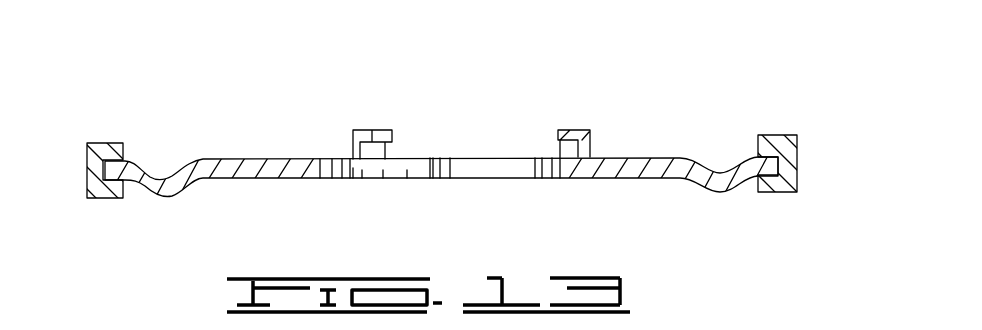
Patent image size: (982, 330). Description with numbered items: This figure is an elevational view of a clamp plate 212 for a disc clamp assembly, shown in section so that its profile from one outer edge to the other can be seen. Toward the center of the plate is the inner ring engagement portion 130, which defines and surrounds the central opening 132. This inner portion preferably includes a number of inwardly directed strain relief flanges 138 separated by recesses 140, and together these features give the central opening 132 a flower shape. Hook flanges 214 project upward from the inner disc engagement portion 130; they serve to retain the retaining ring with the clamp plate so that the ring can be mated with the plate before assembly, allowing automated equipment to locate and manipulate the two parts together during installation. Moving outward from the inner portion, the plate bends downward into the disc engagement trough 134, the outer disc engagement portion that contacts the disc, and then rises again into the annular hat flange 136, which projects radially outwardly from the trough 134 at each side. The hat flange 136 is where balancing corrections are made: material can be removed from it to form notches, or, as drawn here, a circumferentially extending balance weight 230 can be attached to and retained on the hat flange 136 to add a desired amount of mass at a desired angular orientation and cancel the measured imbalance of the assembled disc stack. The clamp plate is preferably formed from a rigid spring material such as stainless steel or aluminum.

The clamp plate 212 is at (263, 67).
The inner ring engagement portion 130 is at (273, 158).
The central opening 132 is at (412, 196).
The disc engagement trough 134 is at (160, 158).
The hat flange 136 is at (128, 158).
The strain relief flanges 138 is at (527, 179).
The recesses 140 is at (443, 179).
The hook flanges 214 is at (375, 130).
The balance weight 230 is at (776, 135).